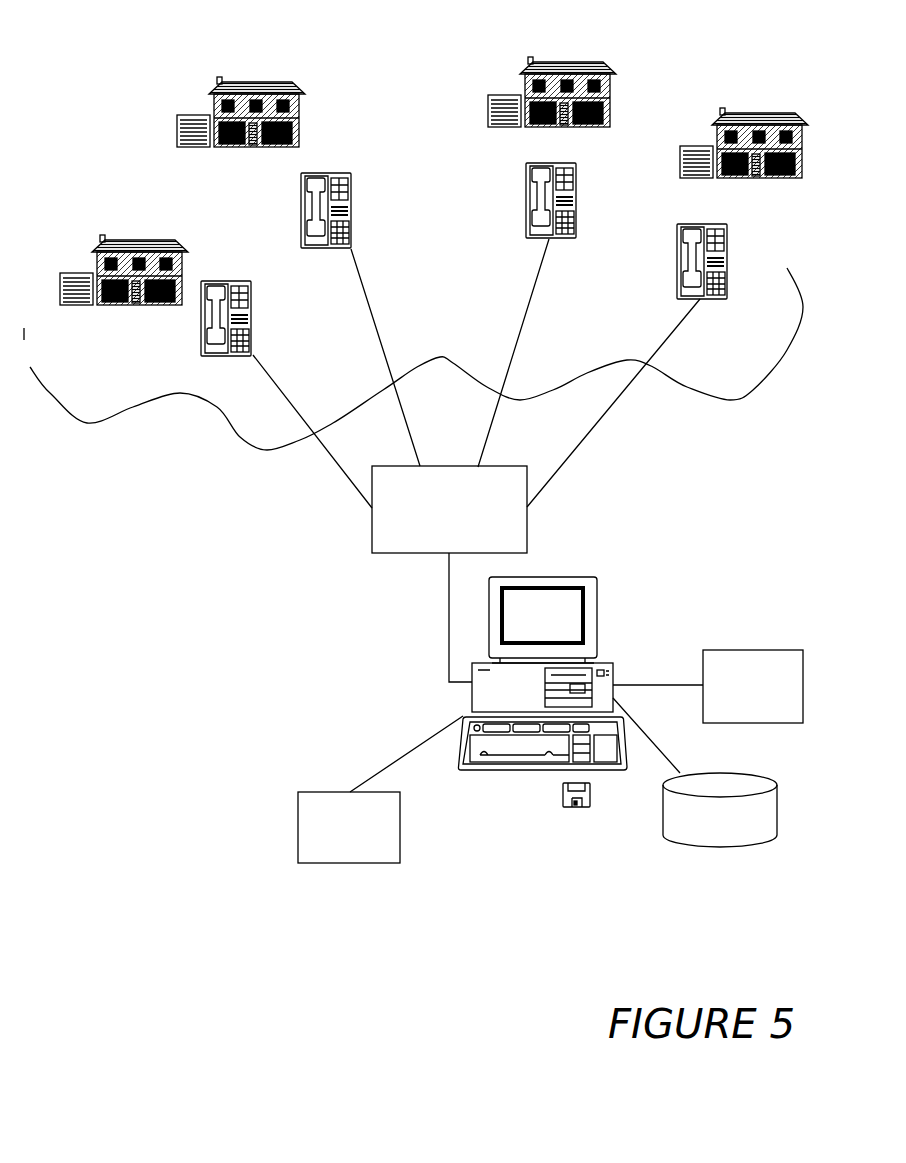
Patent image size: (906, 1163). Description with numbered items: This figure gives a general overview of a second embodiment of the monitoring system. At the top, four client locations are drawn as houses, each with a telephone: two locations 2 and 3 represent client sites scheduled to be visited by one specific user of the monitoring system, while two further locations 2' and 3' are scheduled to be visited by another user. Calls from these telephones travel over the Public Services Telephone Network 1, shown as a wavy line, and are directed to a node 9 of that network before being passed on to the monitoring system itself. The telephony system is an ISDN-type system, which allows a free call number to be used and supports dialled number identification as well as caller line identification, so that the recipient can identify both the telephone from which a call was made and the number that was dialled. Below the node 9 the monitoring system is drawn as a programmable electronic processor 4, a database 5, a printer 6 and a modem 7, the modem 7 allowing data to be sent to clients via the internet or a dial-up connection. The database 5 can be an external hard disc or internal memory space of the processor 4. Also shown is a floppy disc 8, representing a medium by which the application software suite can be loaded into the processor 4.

The Public Services Telephone Network 1 is at (258, 450).
The location 2 is at (124, 248).
The further location 2' is at (552, 67).
The location 3 is at (241, 90).
The further location 3' is at (744, 117).
The programmable electronic processor 4 is at (598, 599).
The database 5 is at (755, 847).
The printer 6 is at (778, 724).
The modem 7 is at (350, 864).
The floppy disc 8 is at (578, 808).
The node 9 is at (448, 466).